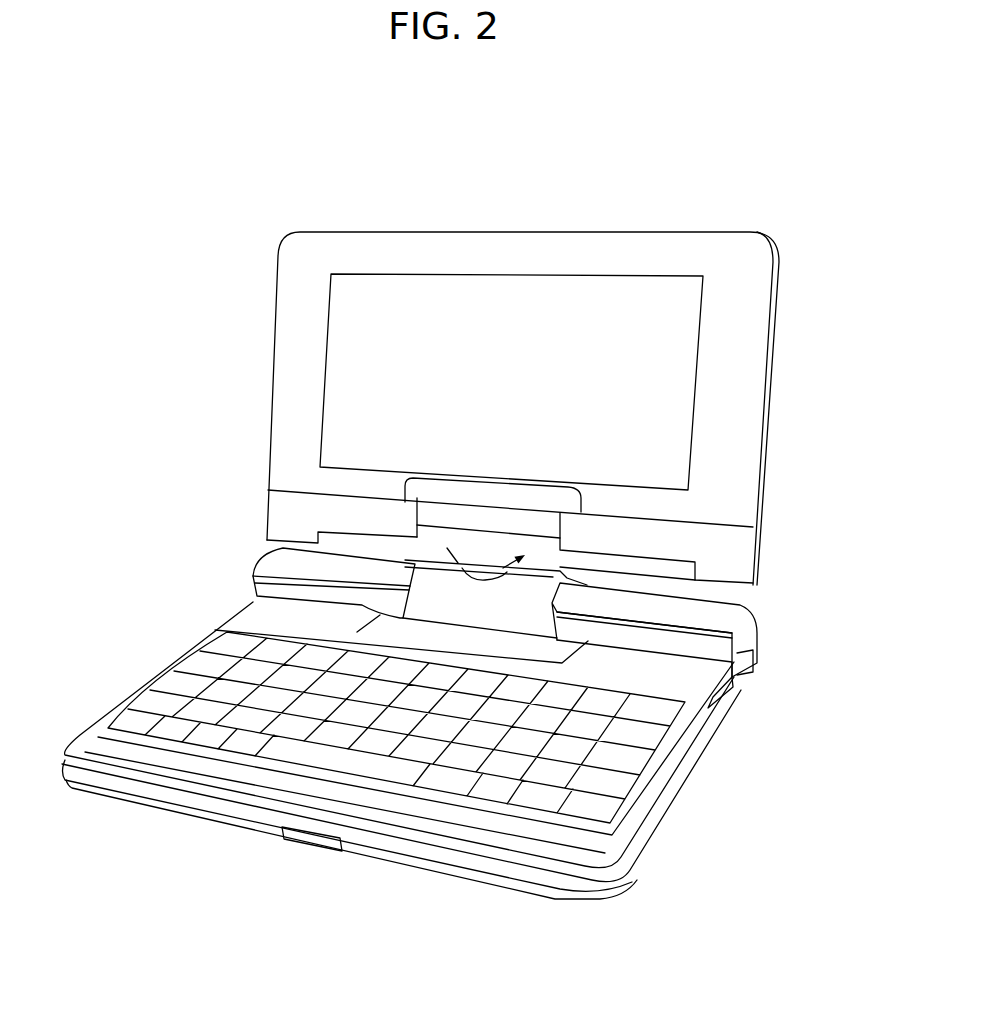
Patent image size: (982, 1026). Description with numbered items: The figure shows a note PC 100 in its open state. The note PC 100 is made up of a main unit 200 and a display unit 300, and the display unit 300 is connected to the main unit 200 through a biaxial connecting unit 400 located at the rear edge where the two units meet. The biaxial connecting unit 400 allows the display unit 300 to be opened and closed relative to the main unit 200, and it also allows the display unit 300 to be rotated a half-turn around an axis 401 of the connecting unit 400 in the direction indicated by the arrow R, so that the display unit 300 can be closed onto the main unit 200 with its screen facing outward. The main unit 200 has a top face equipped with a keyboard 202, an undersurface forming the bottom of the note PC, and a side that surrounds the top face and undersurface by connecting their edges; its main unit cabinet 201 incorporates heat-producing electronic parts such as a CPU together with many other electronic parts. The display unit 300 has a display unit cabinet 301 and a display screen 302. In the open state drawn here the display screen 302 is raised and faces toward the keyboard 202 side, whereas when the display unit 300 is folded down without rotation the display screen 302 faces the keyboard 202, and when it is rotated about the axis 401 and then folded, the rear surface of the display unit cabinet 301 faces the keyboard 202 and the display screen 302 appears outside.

The note PC 100 is at (258, 195).
The main unit 200 is at (151, 634).
The main unit cabinet 201 is at (252, 615).
The keyboard 202 is at (622, 725).
The display unit 300 is at (256, 323).
The display unit cabinet 301 is at (275, 385).
The display screen 302 is at (652, 296).
The biaxial connecting unit 400 is at (533, 588).
The axis 401 is at (490, 563).